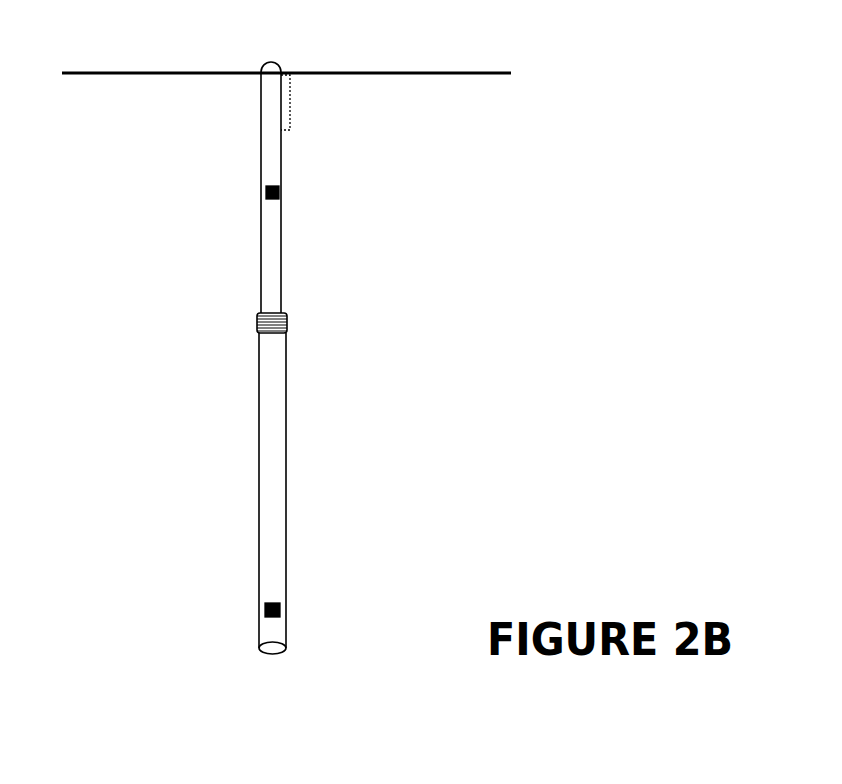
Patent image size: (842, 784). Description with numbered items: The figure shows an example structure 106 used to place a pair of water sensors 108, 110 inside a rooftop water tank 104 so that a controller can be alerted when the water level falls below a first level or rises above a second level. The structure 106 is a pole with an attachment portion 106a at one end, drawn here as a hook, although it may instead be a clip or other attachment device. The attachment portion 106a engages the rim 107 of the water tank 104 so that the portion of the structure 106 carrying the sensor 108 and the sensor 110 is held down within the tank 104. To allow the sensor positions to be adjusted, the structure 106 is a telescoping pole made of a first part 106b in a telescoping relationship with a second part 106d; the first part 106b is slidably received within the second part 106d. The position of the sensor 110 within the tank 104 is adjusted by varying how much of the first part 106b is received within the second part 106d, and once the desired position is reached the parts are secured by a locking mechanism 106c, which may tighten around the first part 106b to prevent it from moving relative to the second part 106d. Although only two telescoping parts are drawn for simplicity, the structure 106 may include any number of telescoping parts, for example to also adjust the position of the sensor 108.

The rooftop water tank 104 is at (122, 178).
The structure 106 is at (234, 352).
The attachment portion 106a is at (288, 103).
The first part 106b is at (283, 247).
The locking mechanism 106c is at (287, 316).
The second part 106d is at (286, 527).
The rim 107 is at (436, 72).
The sensor 108 is at (280, 190).
The sensor 110 is at (281, 608).